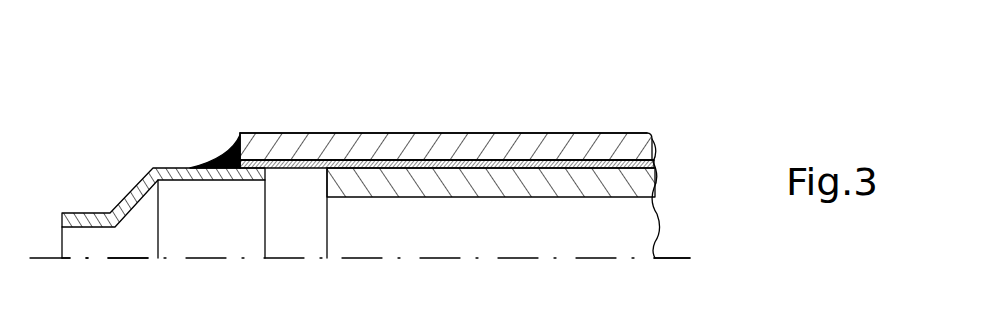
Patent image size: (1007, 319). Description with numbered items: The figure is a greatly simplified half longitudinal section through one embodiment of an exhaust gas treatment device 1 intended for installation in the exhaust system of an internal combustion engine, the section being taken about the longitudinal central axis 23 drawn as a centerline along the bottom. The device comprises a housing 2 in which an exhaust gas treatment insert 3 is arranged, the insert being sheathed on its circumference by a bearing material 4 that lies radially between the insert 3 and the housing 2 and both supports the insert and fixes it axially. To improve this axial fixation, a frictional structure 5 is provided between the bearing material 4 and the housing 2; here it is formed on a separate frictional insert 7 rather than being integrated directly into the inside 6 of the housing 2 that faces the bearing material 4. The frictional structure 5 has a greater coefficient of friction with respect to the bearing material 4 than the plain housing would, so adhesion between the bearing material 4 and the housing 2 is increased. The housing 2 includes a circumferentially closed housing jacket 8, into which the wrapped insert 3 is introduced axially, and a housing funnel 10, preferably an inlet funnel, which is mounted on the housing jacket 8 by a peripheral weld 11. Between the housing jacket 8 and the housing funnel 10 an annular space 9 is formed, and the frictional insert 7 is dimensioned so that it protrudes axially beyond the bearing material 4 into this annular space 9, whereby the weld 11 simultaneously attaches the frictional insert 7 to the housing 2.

The exhaust gas treatment device 1 is at (688, 106).
The housing 2 is at (511, 125).
The exhaust gas treatment insert 3 is at (402, 236).
The bearing material 4 is at (539, 187).
The frictional structure 5 is at (419, 168).
The inside 6 is at (295, 168).
The frictional insert 7 is at (600, 150).
The housing jacket 8 is at (362, 147).
The annular space 9 is at (255, 160).
The housing funnel 10 is at (127, 192).
The peripheral weld 11 is at (218, 160).
The longitudinal central axis 23 is at (112, 260).